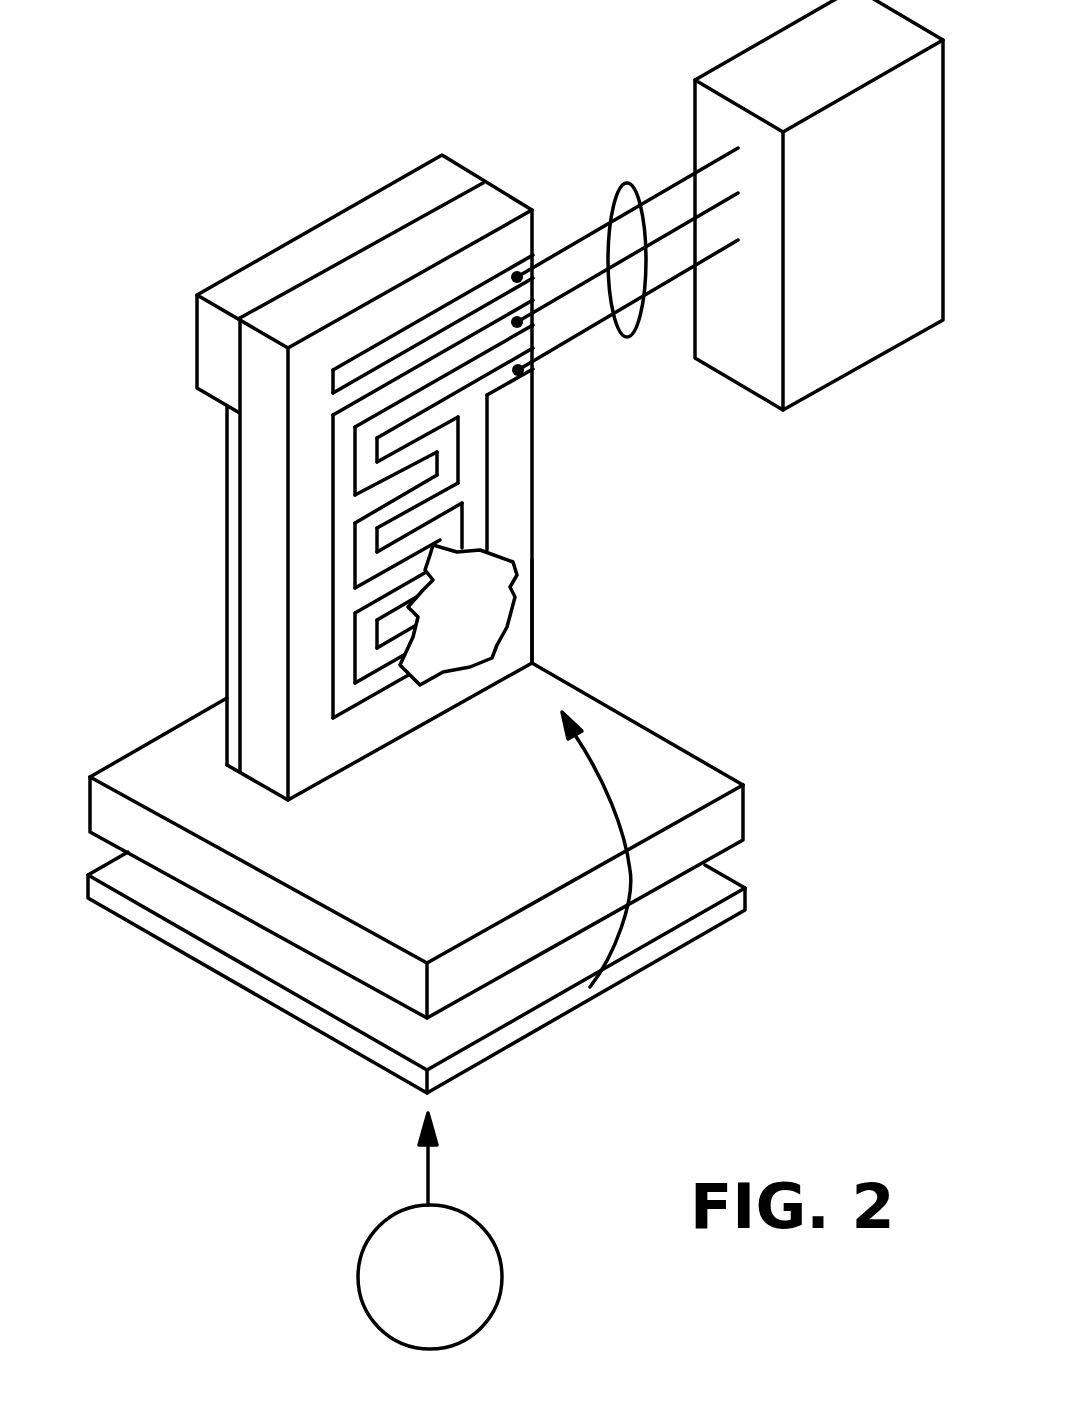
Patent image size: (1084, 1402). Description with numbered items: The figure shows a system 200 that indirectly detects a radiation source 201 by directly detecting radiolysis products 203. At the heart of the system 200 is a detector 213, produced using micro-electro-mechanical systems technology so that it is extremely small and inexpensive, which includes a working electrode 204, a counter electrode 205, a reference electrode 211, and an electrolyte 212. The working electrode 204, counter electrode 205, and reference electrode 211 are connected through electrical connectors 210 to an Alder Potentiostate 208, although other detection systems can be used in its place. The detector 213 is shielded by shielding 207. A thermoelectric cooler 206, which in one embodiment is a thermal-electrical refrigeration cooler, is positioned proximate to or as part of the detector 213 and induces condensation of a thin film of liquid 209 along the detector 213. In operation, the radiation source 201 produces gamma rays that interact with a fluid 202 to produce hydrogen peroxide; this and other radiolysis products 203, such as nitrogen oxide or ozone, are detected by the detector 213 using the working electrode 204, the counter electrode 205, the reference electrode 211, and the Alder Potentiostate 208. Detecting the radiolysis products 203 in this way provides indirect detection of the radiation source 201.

The system 200 is at (518, 82).
The radiation source 201 is at (460, 1301).
The fluid 202 is at (283, 1010).
The radiolysis products 203 is at (615, 793).
The working electrode 204 is at (487, 335).
The counter electrode 205 is at (487, 395).
The thermoelectric cooler 206 is at (297, 263).
The shielding 207 is at (405, 884).
The Alder Potentiostate 208 is at (900, 253).
The film of liquid 209 is at (227, 573).
The electrical connectors 210 is at (627, 183).
The reference electrode 211 is at (493, 293).
The electrolyte 212 is at (475, 608).
The detector 213 is at (540, 542).